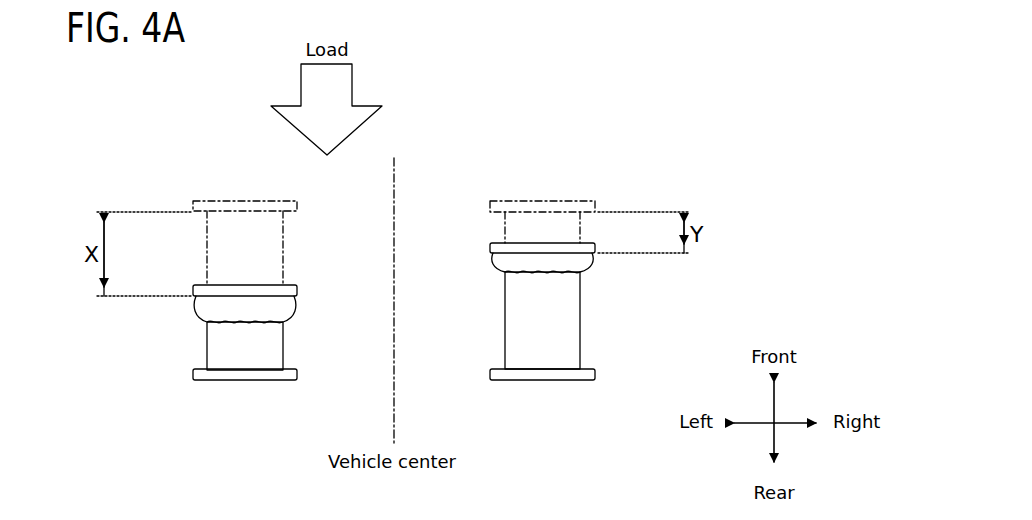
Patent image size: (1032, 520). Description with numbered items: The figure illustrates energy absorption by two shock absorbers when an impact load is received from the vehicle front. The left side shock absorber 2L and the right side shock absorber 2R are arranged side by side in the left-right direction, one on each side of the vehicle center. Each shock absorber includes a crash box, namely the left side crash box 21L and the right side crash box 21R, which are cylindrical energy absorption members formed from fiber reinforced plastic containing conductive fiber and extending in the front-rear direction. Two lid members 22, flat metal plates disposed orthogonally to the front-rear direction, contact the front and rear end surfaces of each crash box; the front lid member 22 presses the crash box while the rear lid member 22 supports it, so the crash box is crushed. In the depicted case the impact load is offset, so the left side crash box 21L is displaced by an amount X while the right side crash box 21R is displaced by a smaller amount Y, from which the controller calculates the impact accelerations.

The left side shock absorber 2L is at (165, 190).
The right side shock absorber 2R is at (609, 192).
The left side crash box 21L is at (207, 340).
The right side crash box 21R is at (580, 310).
The lid member 22 is at (193, 291).